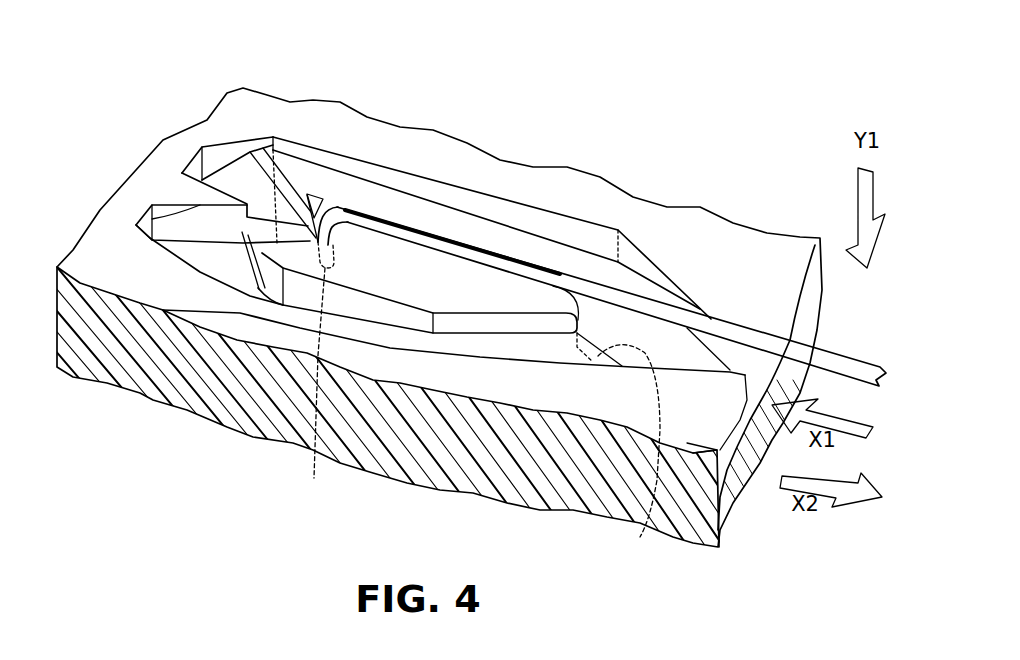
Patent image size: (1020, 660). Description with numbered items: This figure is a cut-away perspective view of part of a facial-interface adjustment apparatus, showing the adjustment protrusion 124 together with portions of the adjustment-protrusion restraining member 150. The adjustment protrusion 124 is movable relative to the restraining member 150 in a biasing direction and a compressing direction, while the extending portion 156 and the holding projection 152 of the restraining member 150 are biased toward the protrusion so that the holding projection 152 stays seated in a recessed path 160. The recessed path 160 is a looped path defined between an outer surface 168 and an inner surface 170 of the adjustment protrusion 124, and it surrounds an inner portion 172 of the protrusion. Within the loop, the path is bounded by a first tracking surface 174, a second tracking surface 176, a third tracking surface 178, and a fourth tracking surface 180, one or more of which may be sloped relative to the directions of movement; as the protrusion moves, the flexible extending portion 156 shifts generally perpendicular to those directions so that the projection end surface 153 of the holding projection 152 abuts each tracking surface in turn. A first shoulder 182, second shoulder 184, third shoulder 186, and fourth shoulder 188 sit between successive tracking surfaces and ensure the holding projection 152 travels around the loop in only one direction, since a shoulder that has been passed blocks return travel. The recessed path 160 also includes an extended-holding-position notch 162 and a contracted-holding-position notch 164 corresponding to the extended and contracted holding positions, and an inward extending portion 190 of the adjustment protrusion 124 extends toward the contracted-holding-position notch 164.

The adjustment protrusion 124 is at (667, 207).
The adjustment-protrusion restraining member 150 is at (847, 357).
The holding projection 152 is at (308, 193).
The projection end surface 153 is at (318, 386).
The extending portion 156 is at (745, 370).
The recessed path 160 is at (560, 216).
The extended-holding-position notch 162 is at (746, 378).
The contracted-holding-position notch 164 is at (346, 224).
The outer surface 168 is at (587, 237).
The inner surface 170 is at (420, 318).
The inner portion 172 is at (337, 197).
The first tracking surface 174 is at (417, 207).
The second tracking surface 176 is at (222, 186).
The third tracking surface 178 is at (273, 137).
The fourth tracking surface 180 is at (494, 347).
The first shoulder 182 is at (220, 190).
The second shoulder 184 is at (261, 232).
The third shoulder 186 is at (258, 290).
The fourth shoulder 188 is at (629, 453).
The inward extending portion 190 is at (140, 214).